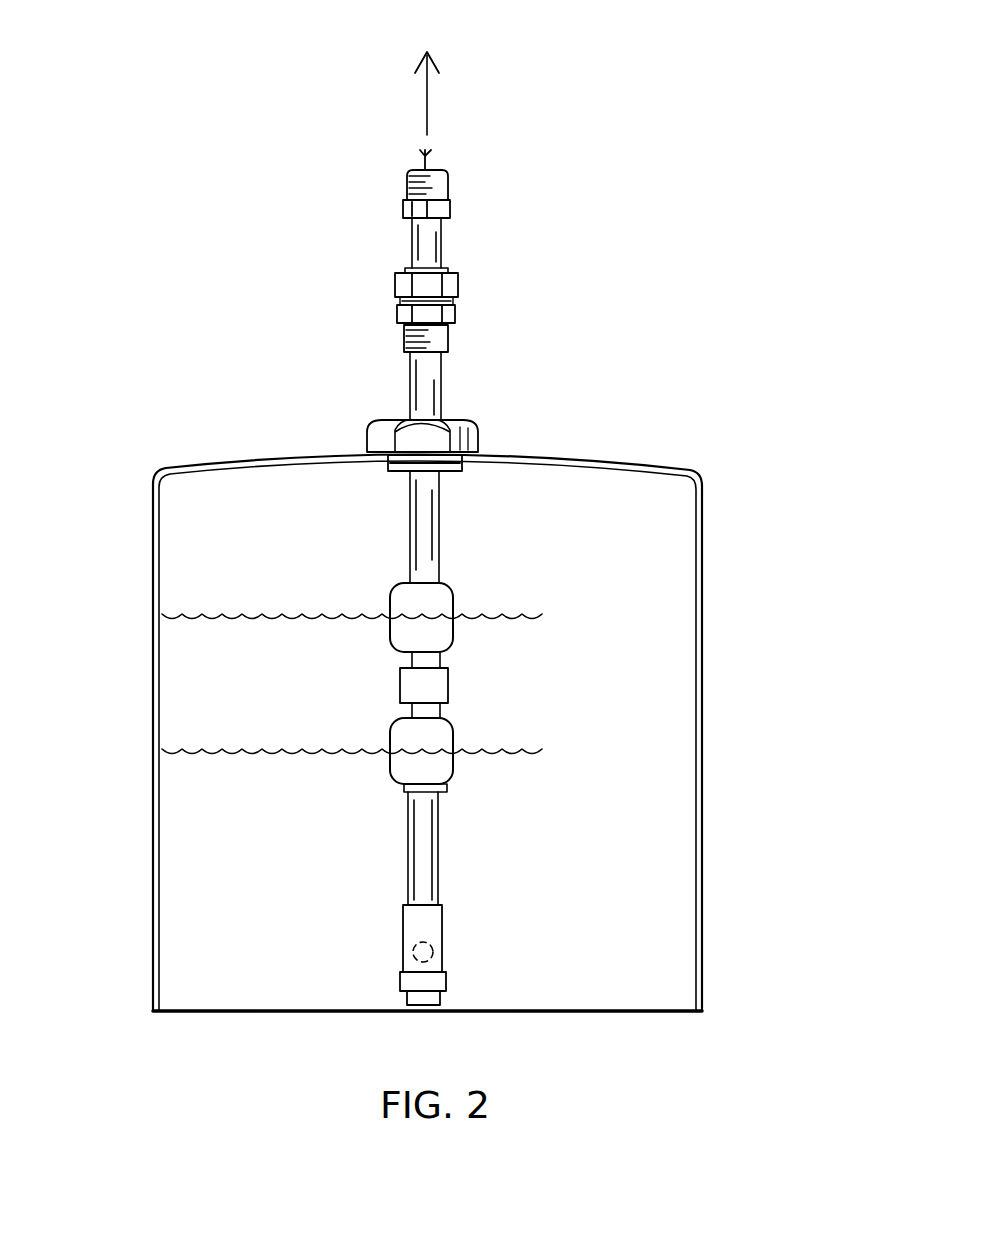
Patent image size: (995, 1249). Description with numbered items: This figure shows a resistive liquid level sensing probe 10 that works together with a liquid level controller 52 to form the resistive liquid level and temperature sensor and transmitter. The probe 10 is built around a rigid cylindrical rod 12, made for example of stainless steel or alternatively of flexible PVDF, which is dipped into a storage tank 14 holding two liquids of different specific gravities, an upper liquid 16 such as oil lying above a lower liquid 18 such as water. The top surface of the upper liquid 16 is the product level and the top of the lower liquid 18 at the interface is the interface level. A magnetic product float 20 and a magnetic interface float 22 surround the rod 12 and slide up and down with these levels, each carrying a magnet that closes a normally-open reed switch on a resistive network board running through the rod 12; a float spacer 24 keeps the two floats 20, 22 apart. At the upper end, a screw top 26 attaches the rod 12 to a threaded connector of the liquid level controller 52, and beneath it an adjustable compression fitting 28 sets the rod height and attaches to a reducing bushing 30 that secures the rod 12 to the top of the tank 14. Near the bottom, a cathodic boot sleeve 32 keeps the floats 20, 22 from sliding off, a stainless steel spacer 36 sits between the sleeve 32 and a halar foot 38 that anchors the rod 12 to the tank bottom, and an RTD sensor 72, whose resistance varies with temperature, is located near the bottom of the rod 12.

The resistive liquid level sensing probe 10 is at (476, 806).
The cylindrical rod 12 is at (420, 500).
The storage tank 14 is at (138, 720).
The upper liquid 16 is at (187, 650).
The lower liquid 18 is at (187, 880).
The magnetic product float 20 is at (445, 605).
The magnetic interface float 22 is at (396, 771).
The float spacer 24 is at (448, 688).
The screw top 26 is at (404, 186).
The adjustable compression fitting 28 is at (395, 284).
The reducing bushing 30 is at (485, 444).
The cathodic boot sleeve 32 is at (436, 921).
The spacer 36 is at (400, 980).
The halar foot 38 is at (407, 996).
The liquid level controller 52 is at (444, 76).
The RTD sensor 72 is at (440, 951).